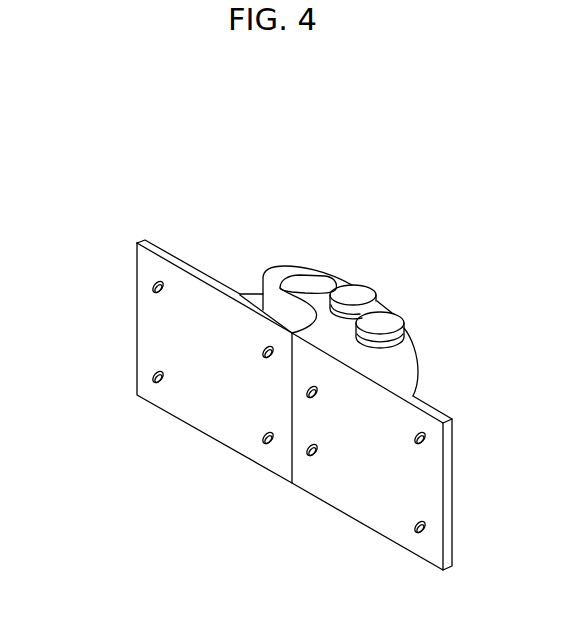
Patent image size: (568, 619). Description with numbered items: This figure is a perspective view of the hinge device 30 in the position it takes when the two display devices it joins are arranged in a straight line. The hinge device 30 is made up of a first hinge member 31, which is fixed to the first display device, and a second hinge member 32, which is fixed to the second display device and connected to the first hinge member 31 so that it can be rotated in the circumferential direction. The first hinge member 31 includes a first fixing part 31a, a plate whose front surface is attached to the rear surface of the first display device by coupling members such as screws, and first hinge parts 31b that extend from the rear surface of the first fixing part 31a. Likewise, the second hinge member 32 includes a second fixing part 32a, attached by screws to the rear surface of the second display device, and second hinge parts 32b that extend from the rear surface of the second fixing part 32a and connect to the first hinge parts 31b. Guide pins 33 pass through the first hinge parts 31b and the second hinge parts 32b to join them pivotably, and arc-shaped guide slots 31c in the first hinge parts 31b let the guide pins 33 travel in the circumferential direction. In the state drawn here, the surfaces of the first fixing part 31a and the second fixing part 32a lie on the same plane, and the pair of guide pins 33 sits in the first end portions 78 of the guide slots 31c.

The hinge device 30 is at (283, 122).
The first hinge member 31 is at (426, 359).
The first fixing part 31a is at (360, 502).
The first hinge parts 31b is at (292, 268).
The guide slots 31c is at (307, 287).
The second hinge member 32 is at (126, 305).
The second fixing part 32a is at (208, 413).
The second hinge parts 32b is at (253, 292).
The guide pins 33 is at (399, 301).
The first end portions 78 is at (405, 294).